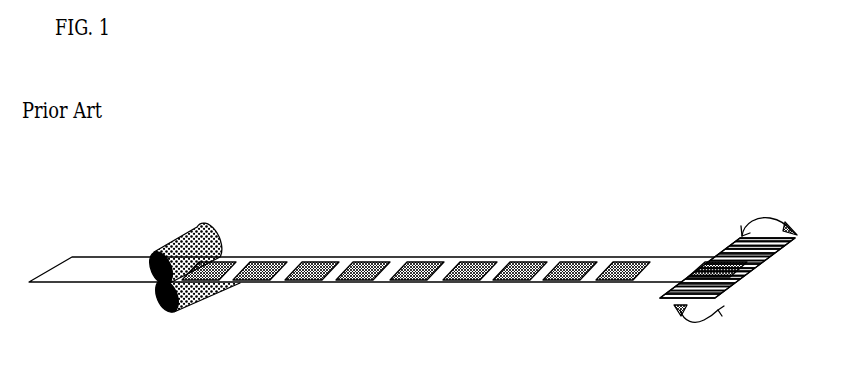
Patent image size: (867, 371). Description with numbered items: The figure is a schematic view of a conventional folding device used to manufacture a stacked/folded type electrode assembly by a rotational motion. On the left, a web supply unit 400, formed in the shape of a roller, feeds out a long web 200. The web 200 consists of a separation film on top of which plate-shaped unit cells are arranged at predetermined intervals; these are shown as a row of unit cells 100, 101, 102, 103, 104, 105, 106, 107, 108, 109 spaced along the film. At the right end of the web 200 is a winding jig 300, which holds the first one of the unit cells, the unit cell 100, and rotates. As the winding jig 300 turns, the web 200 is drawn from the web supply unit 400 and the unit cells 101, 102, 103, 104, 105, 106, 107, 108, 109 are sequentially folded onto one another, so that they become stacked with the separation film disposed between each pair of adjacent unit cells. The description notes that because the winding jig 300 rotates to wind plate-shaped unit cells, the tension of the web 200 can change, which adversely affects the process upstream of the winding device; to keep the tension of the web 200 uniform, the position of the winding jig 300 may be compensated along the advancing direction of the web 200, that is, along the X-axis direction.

The unit cell 100 is at (728, 270).
The unit cell 101 is at (632, 261).
The unit cell 102 is at (579, 261).
The unit cell 103 is at (529, 261).
The unit cell 104 is at (479, 261).
The unit cell 105 is at (426, 261).
The unit cell 106 is at (372, 261).
The unit cell 107 is at (321, 261).
The unit cell 108 is at (269, 261).
The unit cell 109 is at (218, 261).
The web 200 is at (328, 283).
The winding jig 300 is at (797, 232).
The web supply unit 400 is at (200, 227).